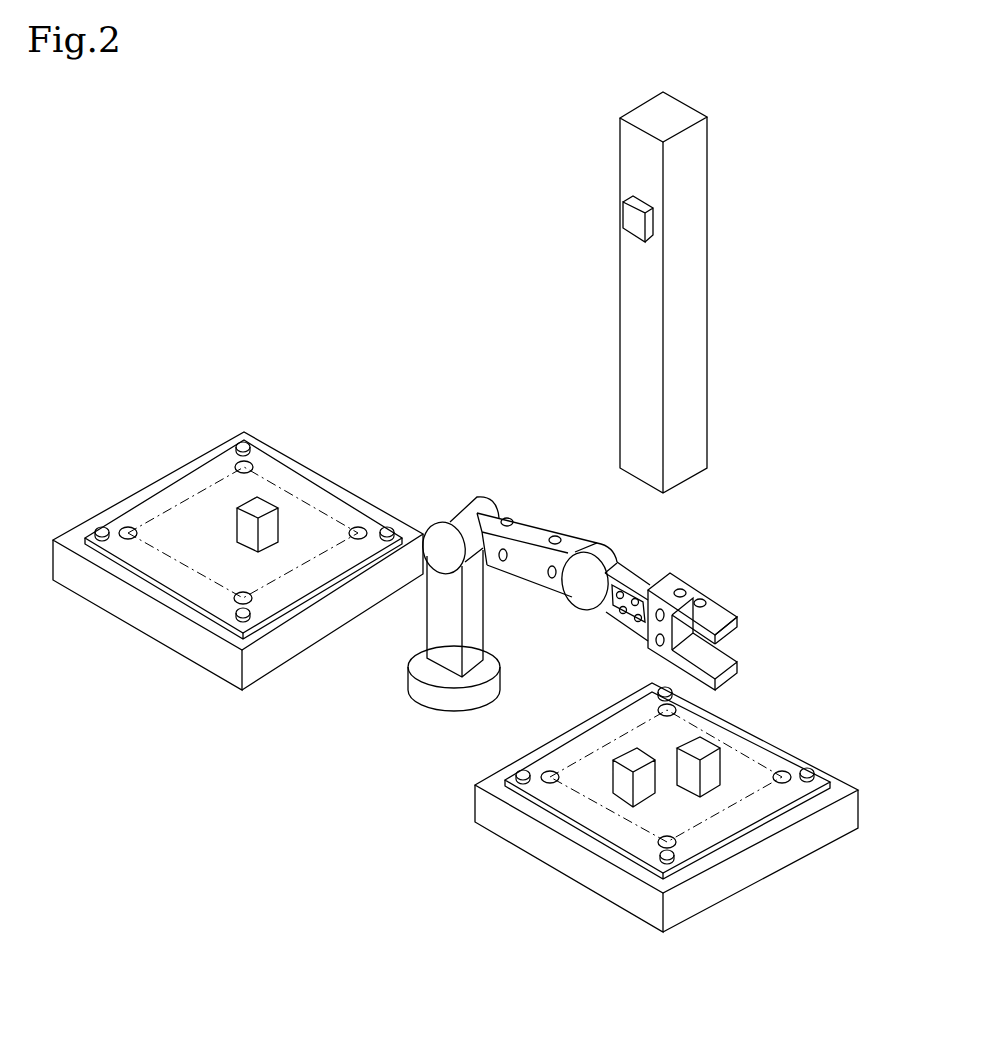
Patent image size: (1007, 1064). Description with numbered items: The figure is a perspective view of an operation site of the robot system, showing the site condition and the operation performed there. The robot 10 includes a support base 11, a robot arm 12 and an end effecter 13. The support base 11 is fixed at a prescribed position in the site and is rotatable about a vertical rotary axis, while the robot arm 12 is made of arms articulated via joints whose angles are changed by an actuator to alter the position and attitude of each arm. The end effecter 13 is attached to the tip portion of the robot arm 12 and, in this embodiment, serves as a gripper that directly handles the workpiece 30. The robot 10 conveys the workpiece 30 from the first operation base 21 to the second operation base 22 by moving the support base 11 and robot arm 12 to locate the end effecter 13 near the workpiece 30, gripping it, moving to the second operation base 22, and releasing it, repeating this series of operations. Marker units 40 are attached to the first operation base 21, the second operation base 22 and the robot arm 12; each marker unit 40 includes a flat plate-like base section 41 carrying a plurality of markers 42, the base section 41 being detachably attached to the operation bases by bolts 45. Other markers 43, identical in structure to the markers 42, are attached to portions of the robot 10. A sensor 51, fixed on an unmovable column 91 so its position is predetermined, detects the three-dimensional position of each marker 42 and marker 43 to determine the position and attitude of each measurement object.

The robot 10 is at (565, 553).
The support base 11 is at (417, 692).
The robot arm 12 is at (535, 495).
The end effecter 13 is at (722, 612).
The first operation base 21 is at (702, 893).
The second operation base 22 is at (122, 602).
The workpiece 30 is at (262, 505).
The marker unit 40 is at (457, 616).
The base section 41 is at (168, 500).
The marker 42 is at (222, 490).
The marker 43 is at (690, 574).
The bolt 45 is at (102, 530).
The sensor 51 is at (632, 217).
The column 91 is at (693, 300).